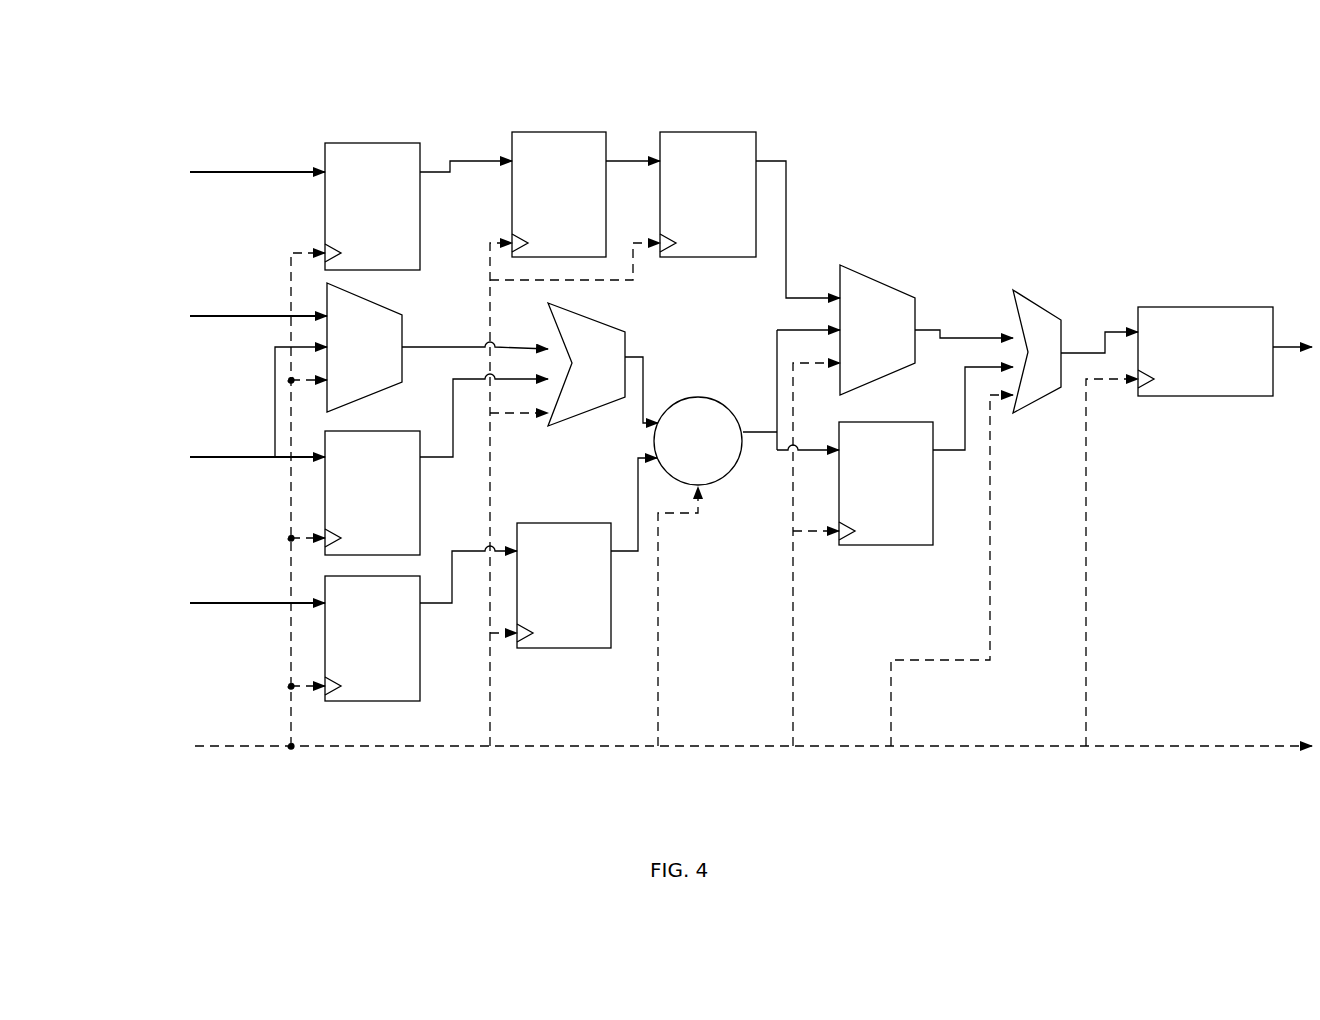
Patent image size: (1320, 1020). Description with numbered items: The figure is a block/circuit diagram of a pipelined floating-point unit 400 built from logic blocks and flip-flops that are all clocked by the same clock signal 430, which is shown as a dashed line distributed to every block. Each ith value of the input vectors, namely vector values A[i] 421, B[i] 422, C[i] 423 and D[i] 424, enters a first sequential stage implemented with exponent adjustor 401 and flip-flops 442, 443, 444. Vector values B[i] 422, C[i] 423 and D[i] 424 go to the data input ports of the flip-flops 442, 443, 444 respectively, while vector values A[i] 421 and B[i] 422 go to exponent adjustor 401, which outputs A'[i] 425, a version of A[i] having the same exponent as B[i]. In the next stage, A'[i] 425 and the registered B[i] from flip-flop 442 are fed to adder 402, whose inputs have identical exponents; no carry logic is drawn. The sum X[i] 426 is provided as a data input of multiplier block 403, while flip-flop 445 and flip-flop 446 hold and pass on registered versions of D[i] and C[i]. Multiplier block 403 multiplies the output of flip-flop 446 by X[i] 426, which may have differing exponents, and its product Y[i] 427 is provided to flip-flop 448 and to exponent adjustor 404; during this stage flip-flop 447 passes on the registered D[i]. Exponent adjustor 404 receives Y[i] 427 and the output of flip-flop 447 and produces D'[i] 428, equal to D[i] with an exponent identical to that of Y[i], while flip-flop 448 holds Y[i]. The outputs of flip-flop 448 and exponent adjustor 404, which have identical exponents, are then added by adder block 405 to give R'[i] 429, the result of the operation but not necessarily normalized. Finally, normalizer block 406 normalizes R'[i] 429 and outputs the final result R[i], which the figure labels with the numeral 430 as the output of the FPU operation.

The floating-point unit 400 is at (1162, 112).
The exponent adjustor 401 is at (364, 347).
The adder 402 is at (586, 364).
The multiplier block 403 is at (698, 441).
The exponent adjustor 404 is at (877, 330).
The adder block 405 is at (1005, 292).
The normalizer block 406 is at (1205, 351).
The vector value A[i] 421 is at (272, 316).
The vector value B[i] 422 is at (272, 457).
The vector value C[i] 423 is at (272, 603).
The vector value D[i] 424 is at (272, 172).
The output A'[i] 425 is at (453, 344).
The output X[i] 426 is at (653, 366).
The output Y[i] 427 is at (767, 358).
The output D'[i] 428 is at (968, 334).
The output R'[i] 429 is at (1119, 330).
The clock signal 430 is at (160, 713).
The flip-flop 442 is at (372, 493).
The flip-flop 443 is at (372, 638).
The flip-flop 444 is at (372, 206).
The flip-flop 445 is at (559, 194).
The flip-flop 446 is at (564, 585).
The flip-flop 447 is at (708, 194).
The flip-flop 448 is at (886, 483).